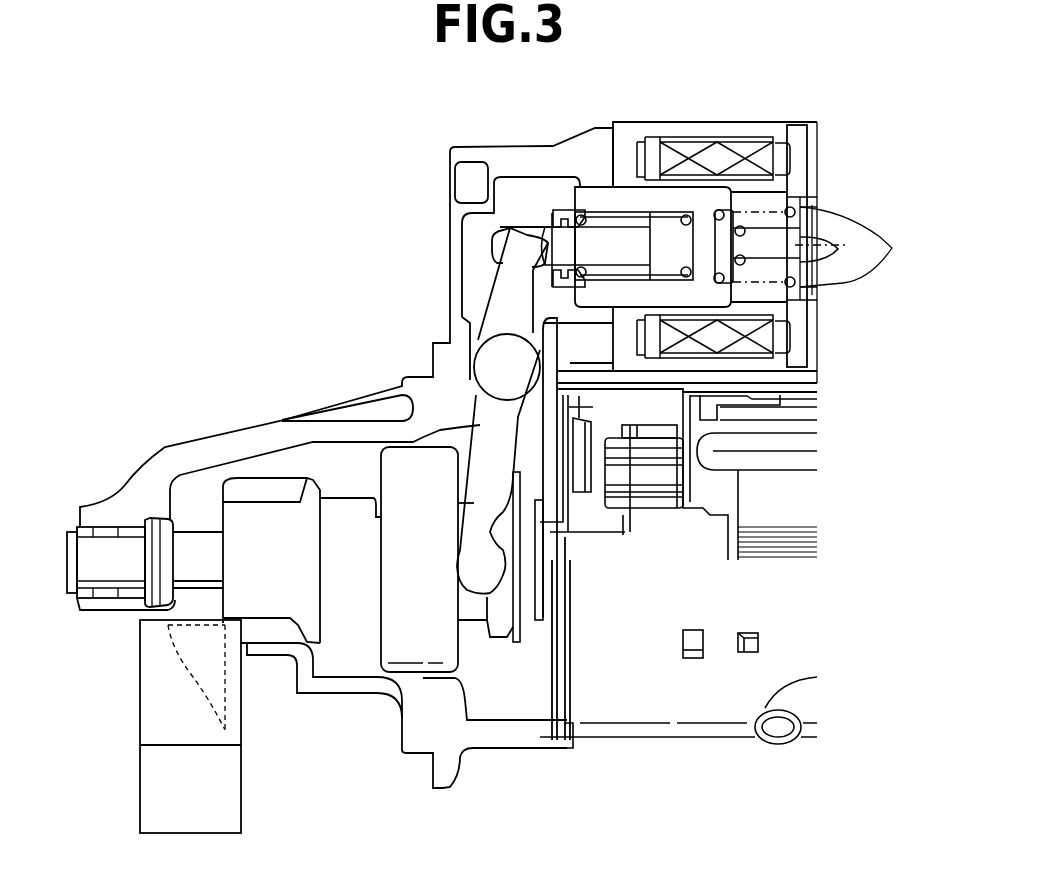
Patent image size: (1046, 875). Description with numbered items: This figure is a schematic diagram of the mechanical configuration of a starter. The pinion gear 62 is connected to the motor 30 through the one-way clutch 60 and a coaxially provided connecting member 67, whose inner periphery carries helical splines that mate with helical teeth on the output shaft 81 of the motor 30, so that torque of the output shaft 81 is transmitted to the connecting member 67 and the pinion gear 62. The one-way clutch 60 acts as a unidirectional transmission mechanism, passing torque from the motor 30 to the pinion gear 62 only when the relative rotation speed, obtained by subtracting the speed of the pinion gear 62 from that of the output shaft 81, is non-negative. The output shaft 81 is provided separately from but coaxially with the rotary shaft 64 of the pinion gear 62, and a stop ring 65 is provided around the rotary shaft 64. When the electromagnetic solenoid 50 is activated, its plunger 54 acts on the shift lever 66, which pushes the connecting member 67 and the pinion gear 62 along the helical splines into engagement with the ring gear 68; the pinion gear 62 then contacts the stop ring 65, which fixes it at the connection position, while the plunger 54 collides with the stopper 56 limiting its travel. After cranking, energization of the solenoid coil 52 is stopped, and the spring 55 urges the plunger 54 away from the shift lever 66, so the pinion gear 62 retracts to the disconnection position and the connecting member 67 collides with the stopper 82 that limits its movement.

The motor 30 is at (612, 588).
The electromagnetic solenoid 50 is at (687, 112).
The solenoid coil 52 is at (747, 315).
The plunger 54 is at (595, 187).
The spring 55 is at (710, 247).
The stopper 56 is at (867, 247).
The one-way clutch 60 is at (463, 717).
The pinion gear 62 is at (263, 477).
The rotary shaft 64 is at (198, 532).
The stop ring 65 is at (175, 593).
The shift lever 66 is at (460, 420).
The connecting member 67 is at (497, 637).
The ring gear 68 is at (241, 797).
The output shaft 81 is at (520, 640).
The stopper 82 is at (535, 620).